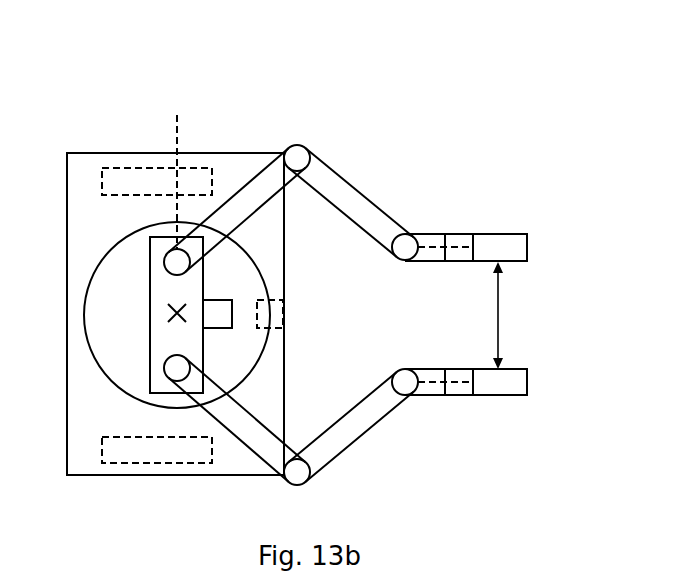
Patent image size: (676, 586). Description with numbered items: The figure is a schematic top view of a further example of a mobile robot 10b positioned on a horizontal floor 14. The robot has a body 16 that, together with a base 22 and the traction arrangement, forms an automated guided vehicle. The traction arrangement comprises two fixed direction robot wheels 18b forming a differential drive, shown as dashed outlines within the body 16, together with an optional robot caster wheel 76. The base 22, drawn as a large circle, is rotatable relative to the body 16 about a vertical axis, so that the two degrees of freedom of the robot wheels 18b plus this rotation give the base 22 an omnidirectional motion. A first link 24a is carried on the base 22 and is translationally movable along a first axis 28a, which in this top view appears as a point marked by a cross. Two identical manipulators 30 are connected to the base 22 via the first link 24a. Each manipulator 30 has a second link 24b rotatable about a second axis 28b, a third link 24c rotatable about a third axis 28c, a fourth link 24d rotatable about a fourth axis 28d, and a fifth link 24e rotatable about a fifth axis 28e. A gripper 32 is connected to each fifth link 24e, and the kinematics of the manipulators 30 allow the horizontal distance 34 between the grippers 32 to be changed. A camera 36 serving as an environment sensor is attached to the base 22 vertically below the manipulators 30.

The mobile robot 10b is at (119, 78).
The floor 14 is at (513, 462).
The body 16 is at (110, 417).
The fixed direction robot wheels 18b is at (160, 450).
The base 22 is at (131, 327).
The first link 24a is at (197, 349).
The second link 24b is at (228, 213).
The third link 24c is at (353, 205).
The fourth link 24d is at (432, 240).
The fifth link 24e is at (462, 240).
The first axis 28a is at (185, 310).
The second axis 28b is at (177, 145).
The third axis 28c is at (293, 146).
The fourth axis 28d is at (403, 262).
The fifth axis 28e is at (438, 263).
The manipulator 30 is at (436, 148).
The gripper 32 is at (505, 245).
The horizontal distance 34 is at (515, 315).
The camera 36 is at (232, 314).
The robot caster wheel 76 is at (283, 314).